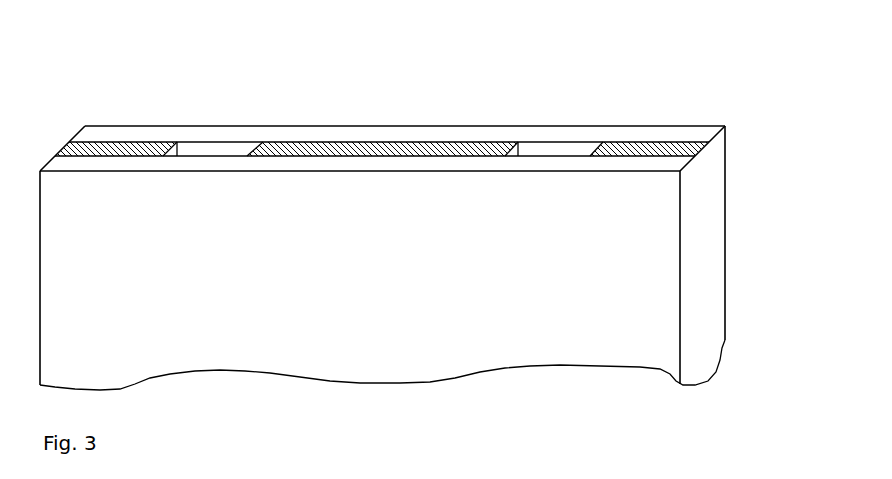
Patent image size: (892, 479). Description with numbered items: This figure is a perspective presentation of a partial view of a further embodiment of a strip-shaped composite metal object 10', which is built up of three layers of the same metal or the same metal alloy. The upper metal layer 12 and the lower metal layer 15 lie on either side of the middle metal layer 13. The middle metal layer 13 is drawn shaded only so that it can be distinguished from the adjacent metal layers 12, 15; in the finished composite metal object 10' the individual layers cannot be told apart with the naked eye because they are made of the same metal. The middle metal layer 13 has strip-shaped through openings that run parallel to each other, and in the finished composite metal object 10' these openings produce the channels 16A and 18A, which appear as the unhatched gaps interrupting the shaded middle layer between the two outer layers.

The strip-shaped composite metal object 10' is at (382, 206).
The metal layer 12 is at (710, 131).
The middle metal layer 13 is at (708, 147).
The metal layer 15 is at (682, 163).
The channel 16A is at (213, 153).
The channel 18A is at (547, 148).